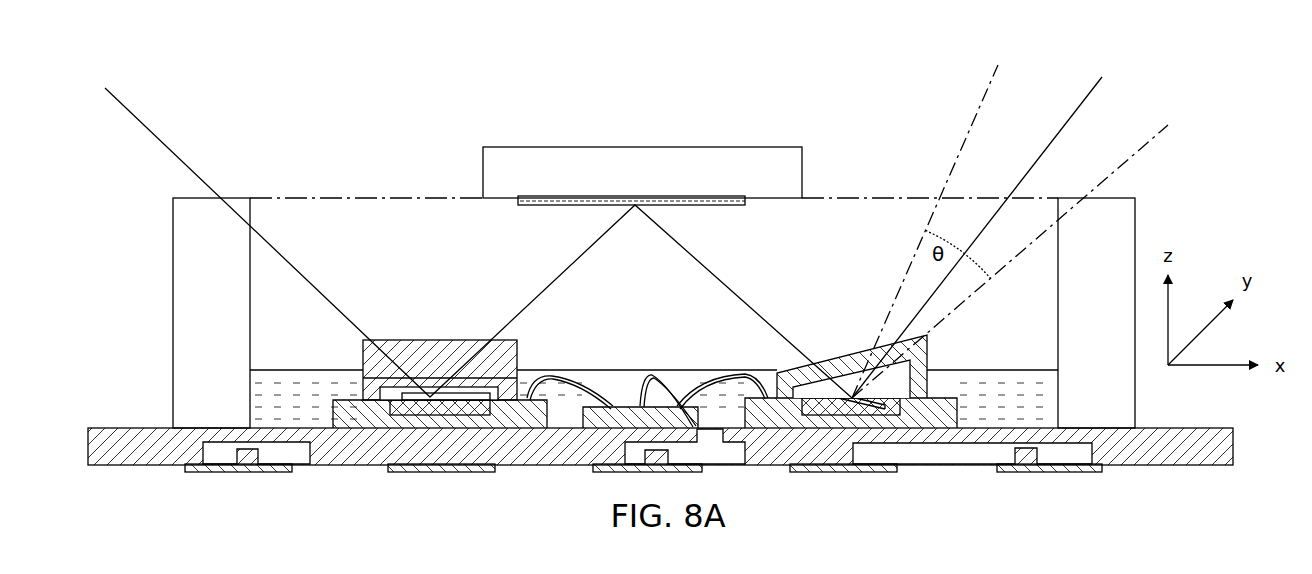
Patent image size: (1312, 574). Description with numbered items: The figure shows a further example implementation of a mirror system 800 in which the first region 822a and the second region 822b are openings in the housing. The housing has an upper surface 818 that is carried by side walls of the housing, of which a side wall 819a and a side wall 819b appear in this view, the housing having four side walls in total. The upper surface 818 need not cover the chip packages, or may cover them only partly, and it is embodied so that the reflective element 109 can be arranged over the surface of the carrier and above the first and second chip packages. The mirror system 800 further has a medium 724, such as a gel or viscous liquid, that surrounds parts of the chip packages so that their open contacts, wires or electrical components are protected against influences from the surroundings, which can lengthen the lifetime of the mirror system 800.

The reflective element 109 is at (533, 206).
The medium 724 is at (290, 385).
The mirror system 800 is at (1166, 83).
The upper surface 818 is at (642, 146).
The side wall 819a is at (173, 313).
The side wall 819b is at (1058, 330).
The first region 822a is at (485, 125).
The second region 822b is at (1058, 123).